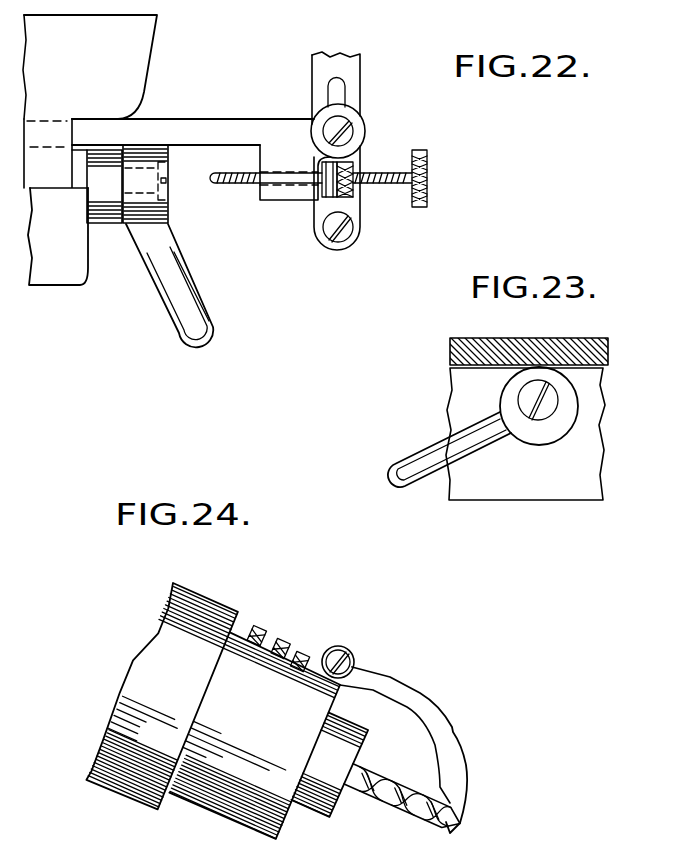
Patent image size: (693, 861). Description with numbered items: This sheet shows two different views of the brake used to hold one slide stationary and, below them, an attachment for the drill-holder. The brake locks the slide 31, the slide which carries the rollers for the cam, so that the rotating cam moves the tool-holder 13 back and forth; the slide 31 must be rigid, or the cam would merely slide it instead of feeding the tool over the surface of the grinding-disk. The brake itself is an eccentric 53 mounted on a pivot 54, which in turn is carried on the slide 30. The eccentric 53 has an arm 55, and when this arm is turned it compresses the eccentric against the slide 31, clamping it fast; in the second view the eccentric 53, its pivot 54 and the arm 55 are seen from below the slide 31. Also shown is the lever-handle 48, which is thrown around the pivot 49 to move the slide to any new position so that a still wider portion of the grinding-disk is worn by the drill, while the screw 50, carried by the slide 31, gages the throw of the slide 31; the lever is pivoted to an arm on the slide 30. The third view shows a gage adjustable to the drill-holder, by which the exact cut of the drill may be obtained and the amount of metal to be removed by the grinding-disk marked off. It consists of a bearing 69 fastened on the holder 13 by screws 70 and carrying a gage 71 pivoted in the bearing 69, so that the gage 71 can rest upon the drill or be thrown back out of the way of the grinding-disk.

In FIG. 24, the tool-holder 13 is at (326, 746).
In FIG. 22, the slide 30 is at (56, 202).
In FIG. 23, the slide 30 is at (532, 485).
In FIG. 22, the slide 31 is at (197, 128).
In FIG. 23, the slide 31 is at (610, 351).
In FIG. 22, the lever-handle 48 is at (354, 90).
In FIG. 22, the pivot 49 is at (337, 232).
In FIG. 22, the screw 50 is at (237, 188).
In FIG. 22, the eccentric 53 is at (160, 154).
In FIG. 23, the eccentric 53 is at (528, 432).
In FIG. 22, the pivot 54 is at (165, 187).
In FIG. 23, the pivot 54 is at (543, 413).
In FIG. 22, the arm 55 is at (182, 312).
In FIG. 23, the arm 55 is at (415, 465).
In FIG. 24, the bearing 69 is at (350, 652).
In FIG. 24, the screws 70 is at (302, 652).
In FIG. 24, the gage 71 is at (440, 722).